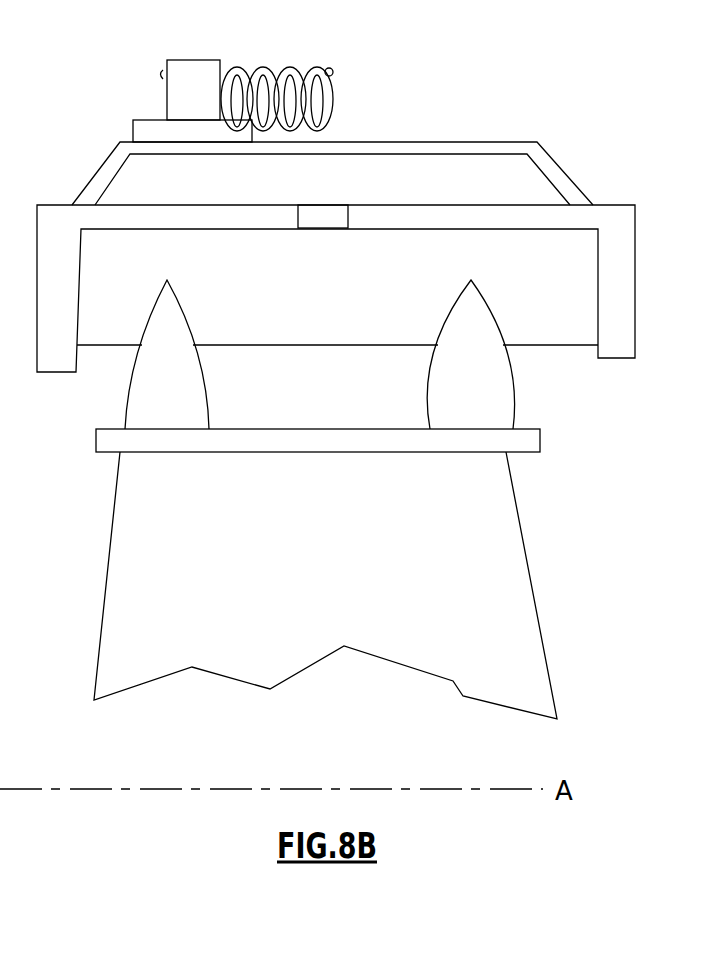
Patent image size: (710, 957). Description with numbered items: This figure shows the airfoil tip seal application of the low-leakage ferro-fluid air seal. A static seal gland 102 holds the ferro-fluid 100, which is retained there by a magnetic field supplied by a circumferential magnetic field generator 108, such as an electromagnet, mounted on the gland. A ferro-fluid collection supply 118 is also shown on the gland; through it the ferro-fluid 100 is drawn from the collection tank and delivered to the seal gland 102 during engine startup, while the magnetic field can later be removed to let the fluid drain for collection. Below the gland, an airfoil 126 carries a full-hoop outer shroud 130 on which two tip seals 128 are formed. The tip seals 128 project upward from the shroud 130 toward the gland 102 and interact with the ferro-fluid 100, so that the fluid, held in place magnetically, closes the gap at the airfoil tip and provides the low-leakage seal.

The ferro-fluid 100 is at (117, 110).
The static seal gland 102 is at (635, 265).
The ferro-fluid collection supply 118 is at (184, 60).
The circumferential magnetic field generator 108 is at (308, 72).
The tip seals 128 is at (500, 392).
The full-hoop outer shroud 130 is at (100, 441).
The airfoil 126 is at (510, 548).